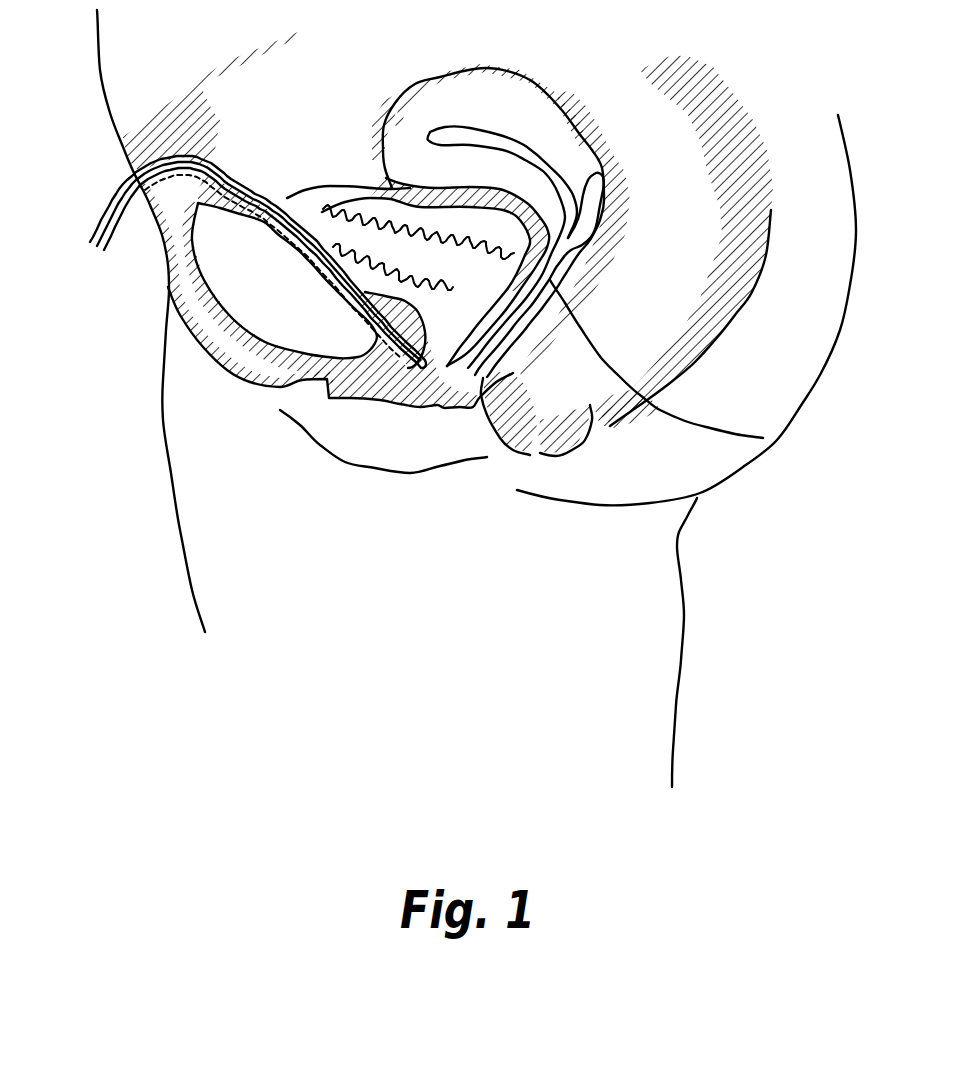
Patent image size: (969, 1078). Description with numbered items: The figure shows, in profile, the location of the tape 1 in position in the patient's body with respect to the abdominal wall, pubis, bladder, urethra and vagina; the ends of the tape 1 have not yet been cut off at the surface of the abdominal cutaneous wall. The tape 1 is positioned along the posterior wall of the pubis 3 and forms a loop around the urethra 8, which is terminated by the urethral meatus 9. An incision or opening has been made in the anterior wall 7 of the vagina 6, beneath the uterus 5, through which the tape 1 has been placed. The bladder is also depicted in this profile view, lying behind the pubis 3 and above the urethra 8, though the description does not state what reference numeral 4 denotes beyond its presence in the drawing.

The tape 1 is at (127, 183).
The pubis 3 is at (276, 275).
The uterus 4 is at (360, 197).
The uterus 5 is at (553, 140).
The vagina 6 is at (763, 438).
The anterior wall 7 is at (507, 313).
The urethra 8 is at (288, 383).
The urethral meatus 9 is at (387, 407).